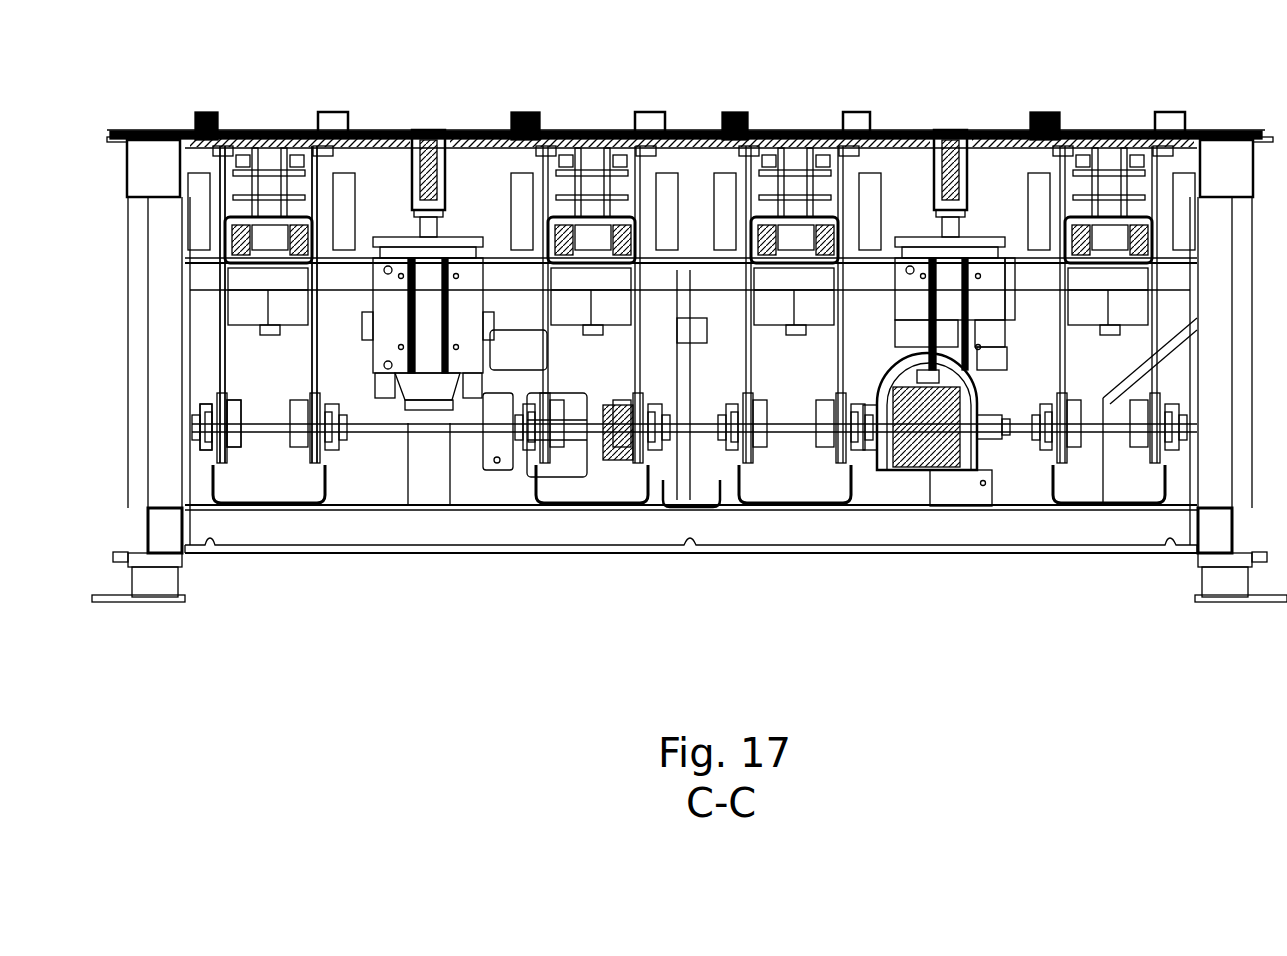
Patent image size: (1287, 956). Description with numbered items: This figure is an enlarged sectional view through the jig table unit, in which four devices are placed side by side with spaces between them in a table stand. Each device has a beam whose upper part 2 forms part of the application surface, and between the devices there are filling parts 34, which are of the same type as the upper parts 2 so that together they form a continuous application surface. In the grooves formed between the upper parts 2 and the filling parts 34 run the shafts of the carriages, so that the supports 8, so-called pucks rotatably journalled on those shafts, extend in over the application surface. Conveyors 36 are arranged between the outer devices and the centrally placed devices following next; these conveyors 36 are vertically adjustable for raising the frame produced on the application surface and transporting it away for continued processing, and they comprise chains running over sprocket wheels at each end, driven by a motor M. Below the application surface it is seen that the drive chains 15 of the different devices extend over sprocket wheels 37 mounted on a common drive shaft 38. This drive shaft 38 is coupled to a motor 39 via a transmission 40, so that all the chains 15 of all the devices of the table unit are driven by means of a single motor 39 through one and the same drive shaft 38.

The upper part 2 is at (580, 133).
The support 8 is at (212, 118).
The drive chain 15 is at (228, 363).
The filling part 34 is at (474, 135).
The conveyor 36 is at (428, 130).
The sprocket wheel 37 is at (232, 440).
The drive shaft 38 is at (267, 427).
The motor 39 is at (977, 420).
The transmission 40 is at (927, 440).
The motor M is at (583, 452).